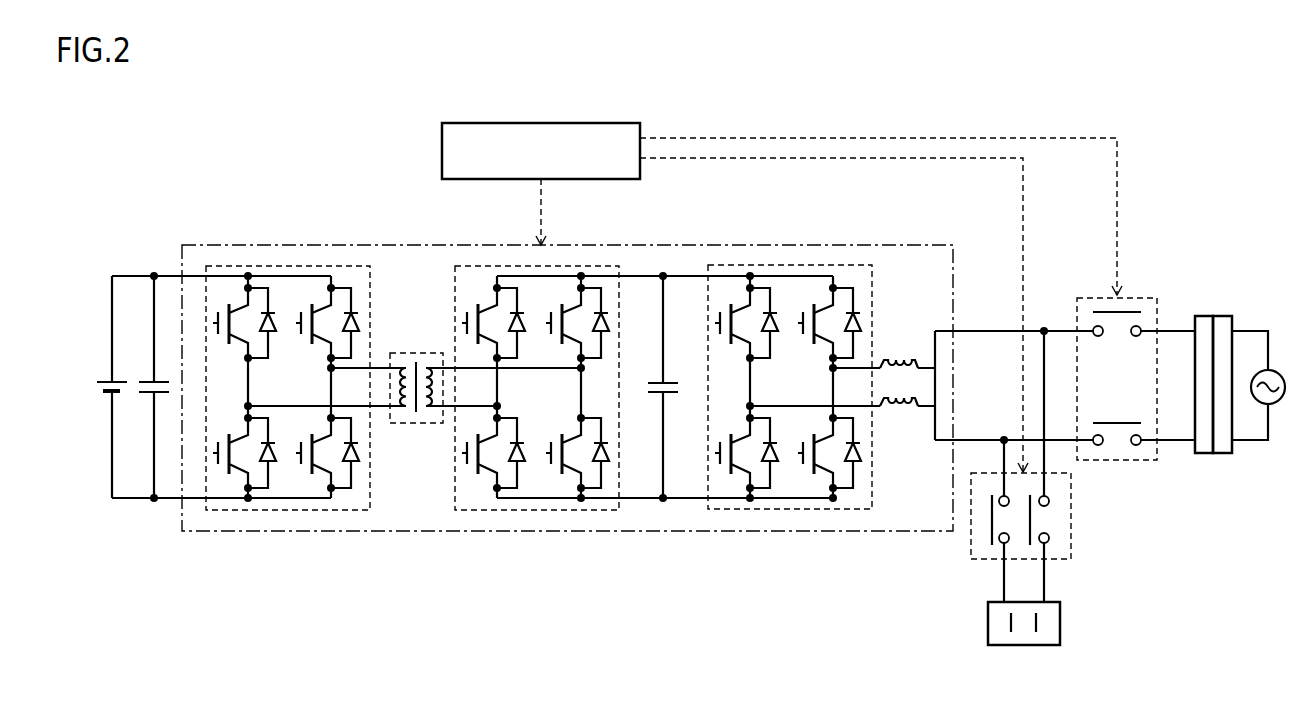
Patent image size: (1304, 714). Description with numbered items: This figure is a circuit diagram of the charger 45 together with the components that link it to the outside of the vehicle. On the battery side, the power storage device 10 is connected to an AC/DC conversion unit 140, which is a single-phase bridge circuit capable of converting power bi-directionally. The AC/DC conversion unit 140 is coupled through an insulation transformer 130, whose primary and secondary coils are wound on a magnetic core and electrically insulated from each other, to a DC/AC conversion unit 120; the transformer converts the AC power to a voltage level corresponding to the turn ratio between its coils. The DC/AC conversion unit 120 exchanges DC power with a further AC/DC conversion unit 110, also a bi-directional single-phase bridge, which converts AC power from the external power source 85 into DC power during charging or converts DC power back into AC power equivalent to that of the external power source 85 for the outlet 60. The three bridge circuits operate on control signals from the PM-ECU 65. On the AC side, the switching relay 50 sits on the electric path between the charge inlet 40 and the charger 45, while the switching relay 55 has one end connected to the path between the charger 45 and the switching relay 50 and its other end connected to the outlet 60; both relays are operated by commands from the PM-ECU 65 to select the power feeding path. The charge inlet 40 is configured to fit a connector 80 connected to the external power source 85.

The power storage device 10 is at (105, 378).
The AC/DC conversion unit 140 is at (338, 266).
The insulation transformer 130 is at (397, 353).
The DC/AC conversion unit 120 is at (589, 266).
The AC/DC conversion unit 110 is at (841, 265).
The charger 45 is at (918, 245).
The PM-ECU 65 is at (592, 123).
The switching relay 50 is at (1140, 298).
The switching relay 55 is at (1071, 515).
The outlet 60 is at (1060, 622).
The charge inlet 40 is at (1205, 316).
The connector 80 is at (1222, 316).
The external power source 85 is at (1284, 383).